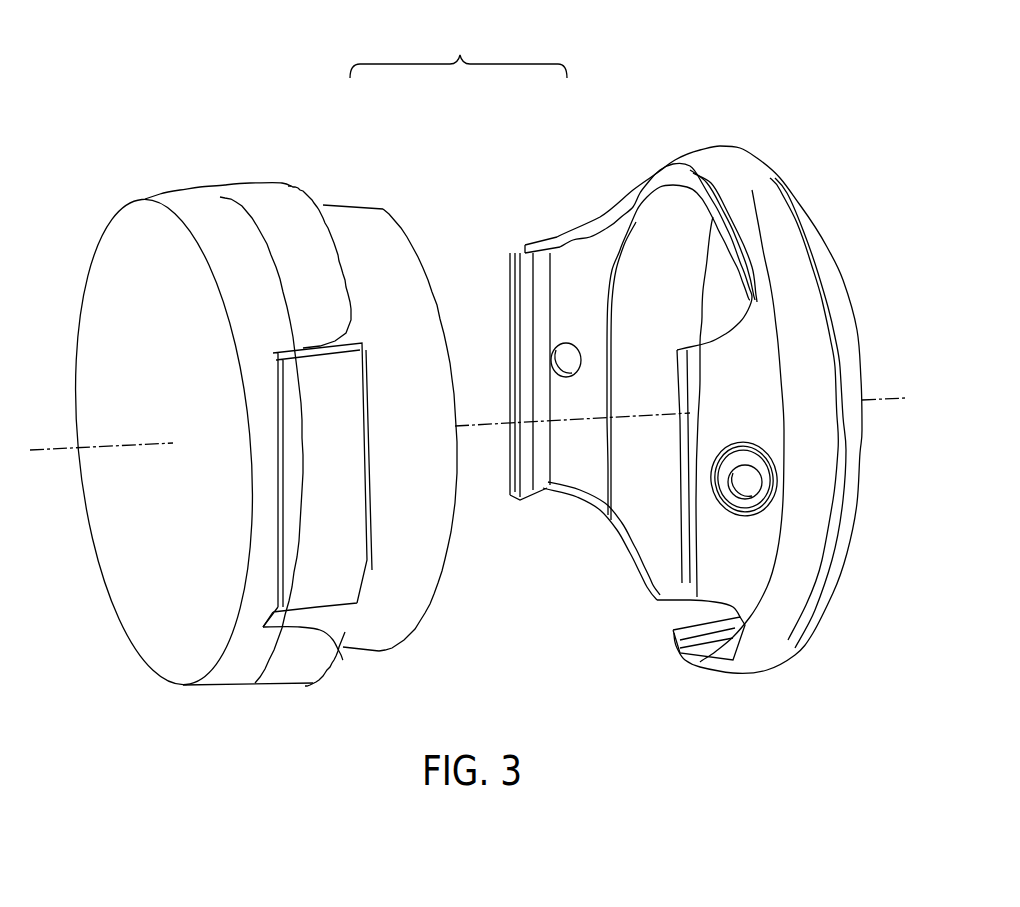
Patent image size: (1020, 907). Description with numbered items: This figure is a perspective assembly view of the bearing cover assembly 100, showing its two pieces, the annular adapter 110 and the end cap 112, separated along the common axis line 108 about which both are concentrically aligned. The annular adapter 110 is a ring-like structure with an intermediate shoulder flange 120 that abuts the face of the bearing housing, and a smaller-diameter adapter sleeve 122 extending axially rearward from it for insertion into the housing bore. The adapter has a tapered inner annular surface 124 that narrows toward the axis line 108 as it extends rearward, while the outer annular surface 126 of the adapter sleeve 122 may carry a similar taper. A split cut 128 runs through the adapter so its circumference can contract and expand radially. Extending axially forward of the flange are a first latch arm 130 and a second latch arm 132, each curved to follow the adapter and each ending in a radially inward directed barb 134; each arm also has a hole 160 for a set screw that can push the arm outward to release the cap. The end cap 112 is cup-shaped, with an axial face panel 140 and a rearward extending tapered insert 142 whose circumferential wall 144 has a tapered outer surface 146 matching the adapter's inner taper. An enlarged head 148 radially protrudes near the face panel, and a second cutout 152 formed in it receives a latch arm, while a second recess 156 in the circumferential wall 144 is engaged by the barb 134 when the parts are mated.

The bearing cover assembly 100 is at (458, 47).
The axis line 108 is at (881, 400).
The annular adapter 110 is at (653, 180).
The end cap 112 is at (157, 198).
The intermediate shoulder flange 120 is at (707, 160).
The adapter sleeve 122 is at (860, 503).
The tapered inner annular surface 124 is at (647, 497).
The outer annular surface 126 is at (830, 257).
The split cut 128 is at (682, 647).
The first latch arm 130 is at (592, 223).
The second latch arm 132 is at (748, 592).
The radially inward directed barb 134 is at (543, 488).
The axial face panel 140 is at (110, 265).
The tapered insert 142 is at (427, 283).
The circumferential wall 144 is at (323, 205).
The tapered outer surface 146 is at (380, 249).
The enlarged head 148 is at (230, 192).
The second cutout 152 is at (272, 597).
The second recess 156 is at (347, 573).
The hole 160 is at (750, 490).